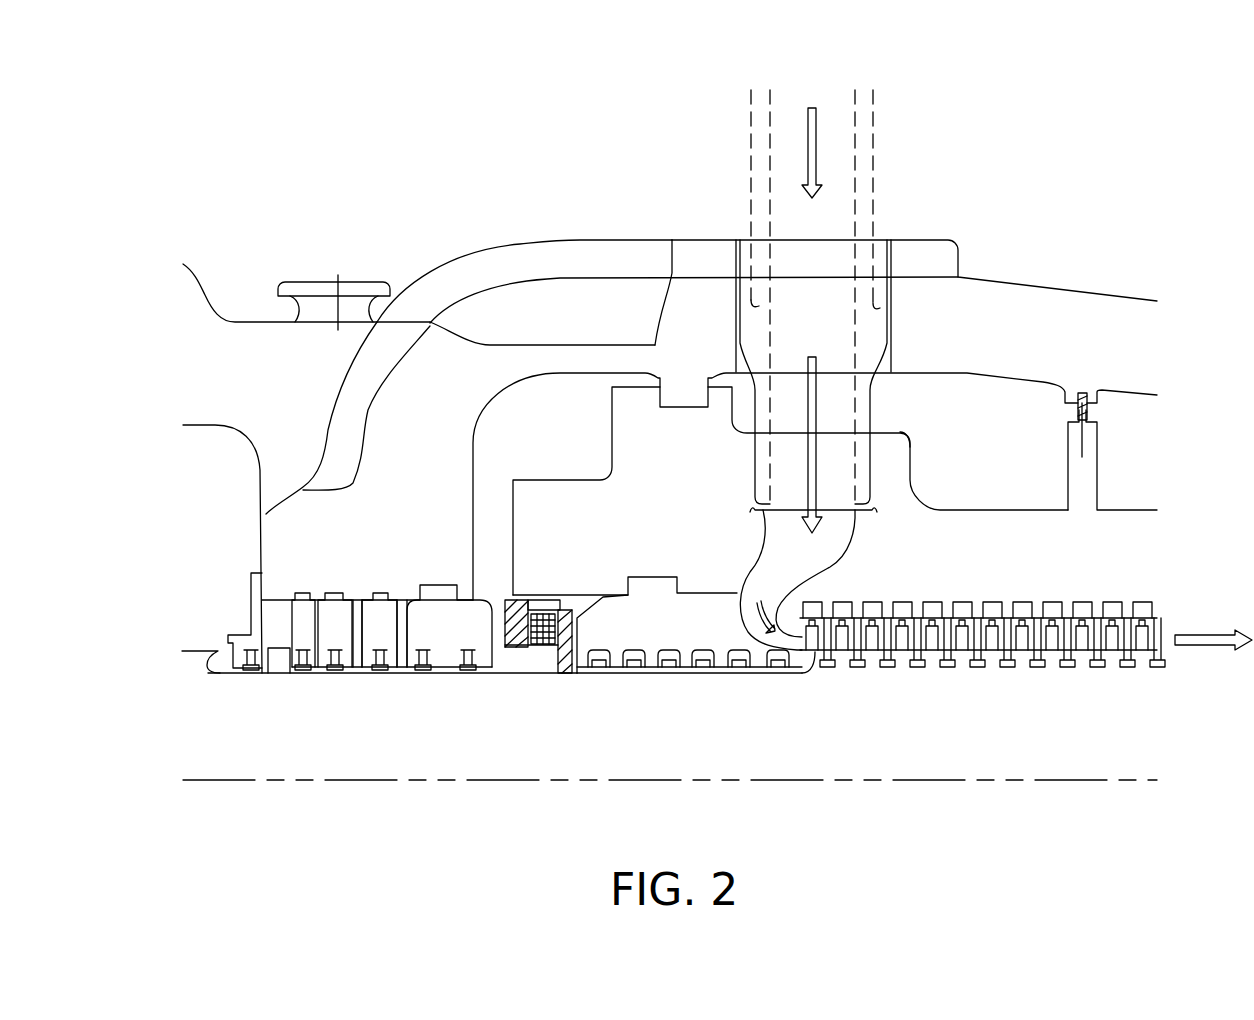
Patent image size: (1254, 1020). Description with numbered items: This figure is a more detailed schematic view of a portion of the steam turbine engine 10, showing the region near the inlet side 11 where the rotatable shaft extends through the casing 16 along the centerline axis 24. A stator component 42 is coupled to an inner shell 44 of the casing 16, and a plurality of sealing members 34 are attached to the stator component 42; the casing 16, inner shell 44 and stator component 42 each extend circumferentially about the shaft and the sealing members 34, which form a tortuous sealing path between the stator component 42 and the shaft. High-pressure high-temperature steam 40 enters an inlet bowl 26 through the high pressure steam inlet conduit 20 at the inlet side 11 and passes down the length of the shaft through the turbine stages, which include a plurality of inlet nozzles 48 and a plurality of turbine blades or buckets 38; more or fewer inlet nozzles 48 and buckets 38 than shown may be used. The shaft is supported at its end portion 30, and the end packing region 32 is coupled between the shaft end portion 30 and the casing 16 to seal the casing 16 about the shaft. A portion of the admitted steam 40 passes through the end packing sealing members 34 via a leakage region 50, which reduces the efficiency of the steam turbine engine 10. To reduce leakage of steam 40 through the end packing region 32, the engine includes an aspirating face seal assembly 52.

The steam turbine engine 10 is at (1108, 150).
The inlet side 11 is at (760, 655).
The casing 16 is at (1065, 290).
The high pressure steam inlet conduit 20 is at (873, 238).
The centerline axis 24 is at (793, 781).
The inlet bowl 26 is at (803, 553).
The shaft end portion 30 is at (203, 651).
The end packing region 32 is at (360, 676).
The sealing members 34 is at (697, 672).
The turbine blades or buckets 38 is at (829, 668).
The high-pressure high-temperature steam 40 is at (815, 108).
The stator component 42 is at (672, 632).
The inner shell 44 is at (672, 520).
The inlet nozzles 48 is at (867, 607).
The leakage region 50 is at (578, 672).
The aspirating face seal assembly 52 is at (540, 652).